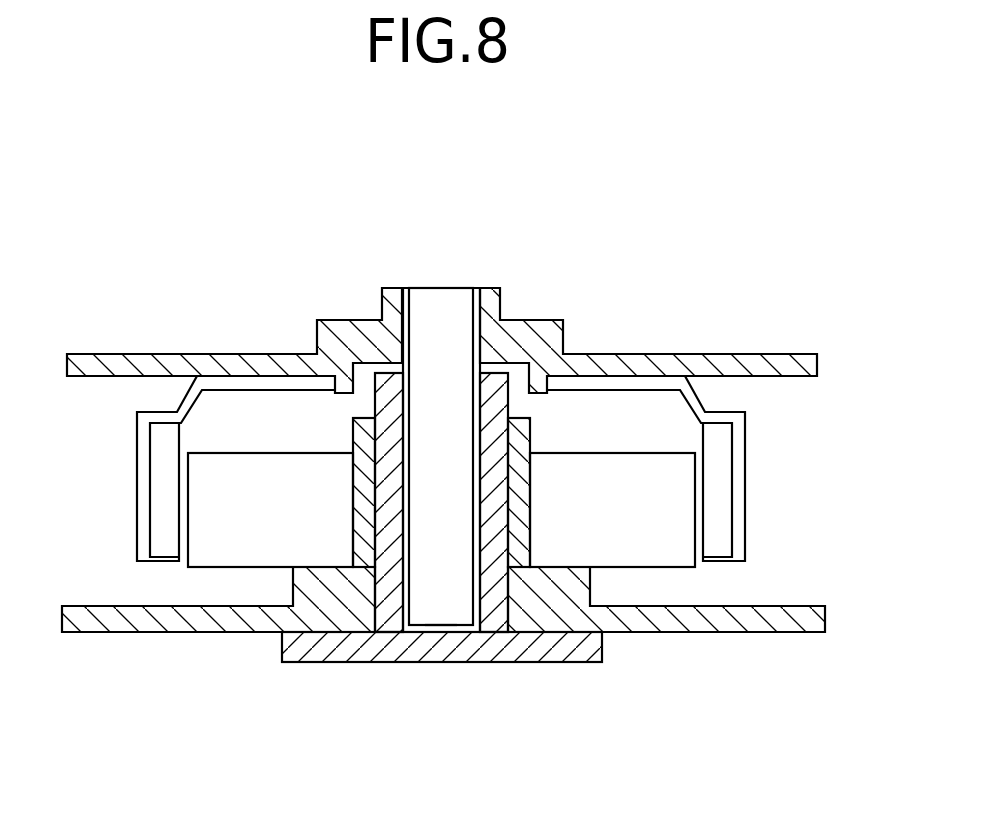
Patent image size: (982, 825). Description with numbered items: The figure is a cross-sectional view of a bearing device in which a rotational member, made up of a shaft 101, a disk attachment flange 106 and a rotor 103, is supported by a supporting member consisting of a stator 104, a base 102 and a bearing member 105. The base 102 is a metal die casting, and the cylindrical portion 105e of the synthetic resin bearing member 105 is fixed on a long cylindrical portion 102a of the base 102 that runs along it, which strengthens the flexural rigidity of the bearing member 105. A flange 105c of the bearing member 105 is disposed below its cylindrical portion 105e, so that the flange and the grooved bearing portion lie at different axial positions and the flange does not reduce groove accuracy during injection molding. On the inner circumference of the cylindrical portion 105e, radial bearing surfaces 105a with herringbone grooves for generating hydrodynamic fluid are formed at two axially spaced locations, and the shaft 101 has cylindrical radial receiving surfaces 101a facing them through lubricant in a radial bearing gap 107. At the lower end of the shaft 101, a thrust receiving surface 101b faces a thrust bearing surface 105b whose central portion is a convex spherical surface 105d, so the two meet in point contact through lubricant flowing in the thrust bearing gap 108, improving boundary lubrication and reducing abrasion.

The shaft 101 is at (447, 287).
The cylindrical radial receiving surfaces 101a is at (488, 498).
The thrust receiving surface 101b is at (455, 628).
The base 102 is at (767, 633).
The cylindrical portion of the base 102a is at (531, 441).
The rotor 103 is at (727, 443).
The stator 104 is at (681, 508).
The bearing member 105 is at (582, 663).
The radial bearing surfaces 105a is at (462, 557).
The thrust bearing surface 105b is at (430, 632).
The flange 105c is at (282, 643).
The convex spherical surface 105d is at (430, 632).
The cylindrical portion of the bearing member 105e is at (498, 382).
The disk attachment flange 106 is at (590, 352).
The radial bearing gap 107 is at (472, 396).
The thrust bearing gap 108 is at (416, 632).